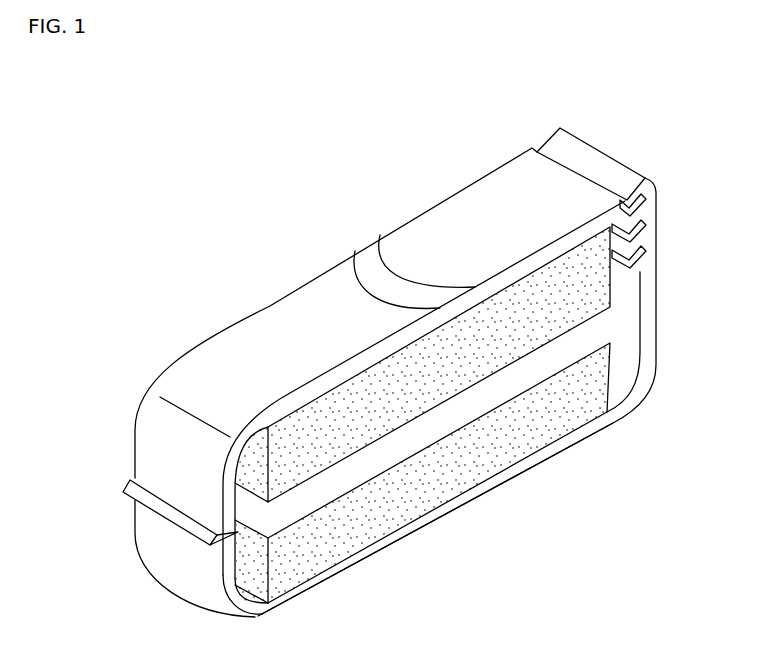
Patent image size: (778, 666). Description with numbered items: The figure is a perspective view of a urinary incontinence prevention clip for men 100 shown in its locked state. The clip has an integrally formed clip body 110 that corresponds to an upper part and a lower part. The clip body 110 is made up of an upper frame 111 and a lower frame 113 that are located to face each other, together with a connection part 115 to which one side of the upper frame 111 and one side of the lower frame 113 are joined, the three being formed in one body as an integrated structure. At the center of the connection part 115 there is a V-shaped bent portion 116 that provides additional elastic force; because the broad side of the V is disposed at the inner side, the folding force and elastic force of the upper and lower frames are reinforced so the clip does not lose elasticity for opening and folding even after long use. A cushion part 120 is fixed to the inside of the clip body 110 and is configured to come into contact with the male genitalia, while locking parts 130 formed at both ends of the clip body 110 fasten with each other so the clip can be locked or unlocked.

The urinary incontinence prevention clip for men 100 is at (362, 133).
The clip body 110 is at (225, 301).
The upper frame 111 is at (305, 297).
The lower frame 113 is at (333, 580).
The connection part 115 is at (180, 547).
The V-shaped bent portion 116 is at (128, 482).
The cushion part 120 is at (500, 460).
The locking parts 130 is at (625, 145).